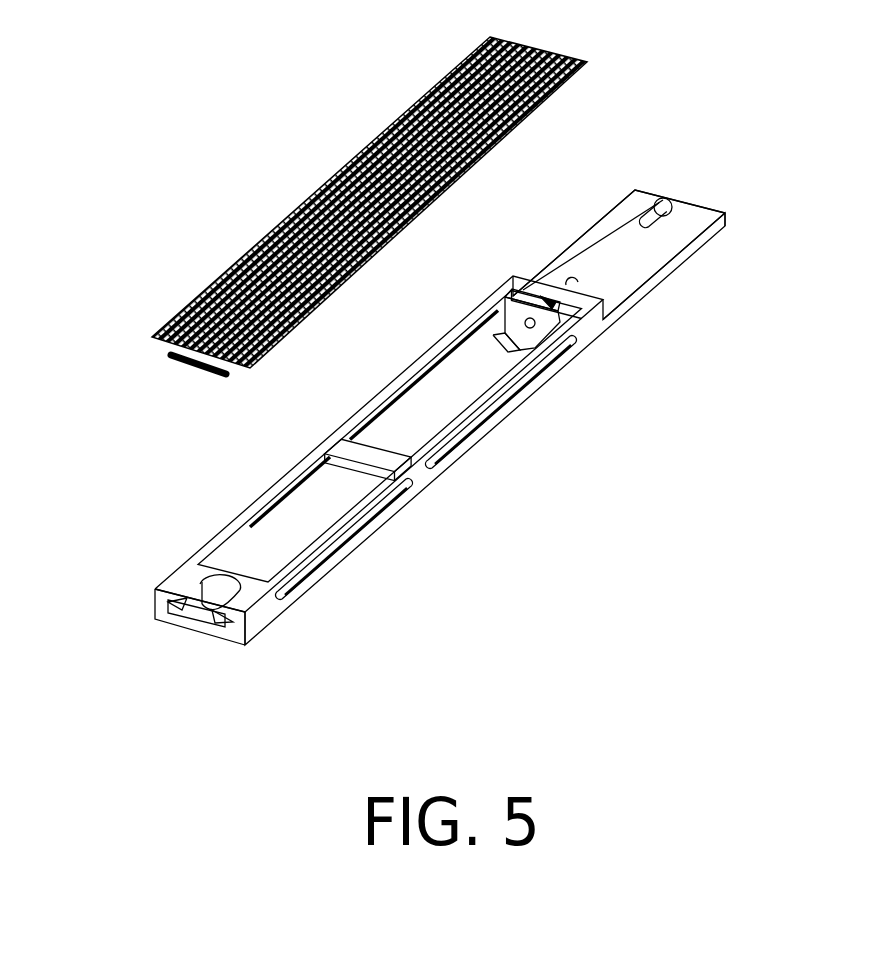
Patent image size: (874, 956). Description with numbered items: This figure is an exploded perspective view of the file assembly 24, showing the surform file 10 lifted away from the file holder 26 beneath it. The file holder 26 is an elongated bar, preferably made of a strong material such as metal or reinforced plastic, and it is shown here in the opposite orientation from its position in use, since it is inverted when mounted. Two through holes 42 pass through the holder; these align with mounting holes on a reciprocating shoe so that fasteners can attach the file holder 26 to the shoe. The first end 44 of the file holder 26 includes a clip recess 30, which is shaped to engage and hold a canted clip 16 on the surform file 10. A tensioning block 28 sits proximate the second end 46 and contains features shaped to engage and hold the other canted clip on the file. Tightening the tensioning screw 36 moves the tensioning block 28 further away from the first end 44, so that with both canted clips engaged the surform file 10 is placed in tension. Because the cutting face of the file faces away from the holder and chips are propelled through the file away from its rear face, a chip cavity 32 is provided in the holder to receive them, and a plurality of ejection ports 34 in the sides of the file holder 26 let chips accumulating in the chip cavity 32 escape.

The surform file 10 is at (283, 228).
The canted clip 16 is at (230, 377).
The file assembly 24 is at (625, 557).
The file holder 26 is at (268, 612).
The tensioning block 28 is at (515, 310).
The clip recess 30 is at (190, 604).
The chip cavity 32 is at (455, 395).
The ejection ports 34 is at (535, 392).
The tensioning screw 36 is at (583, 287).
The through holes 42 is at (667, 205).
The first end 44 is at (233, 634).
The second end 46 is at (700, 248).